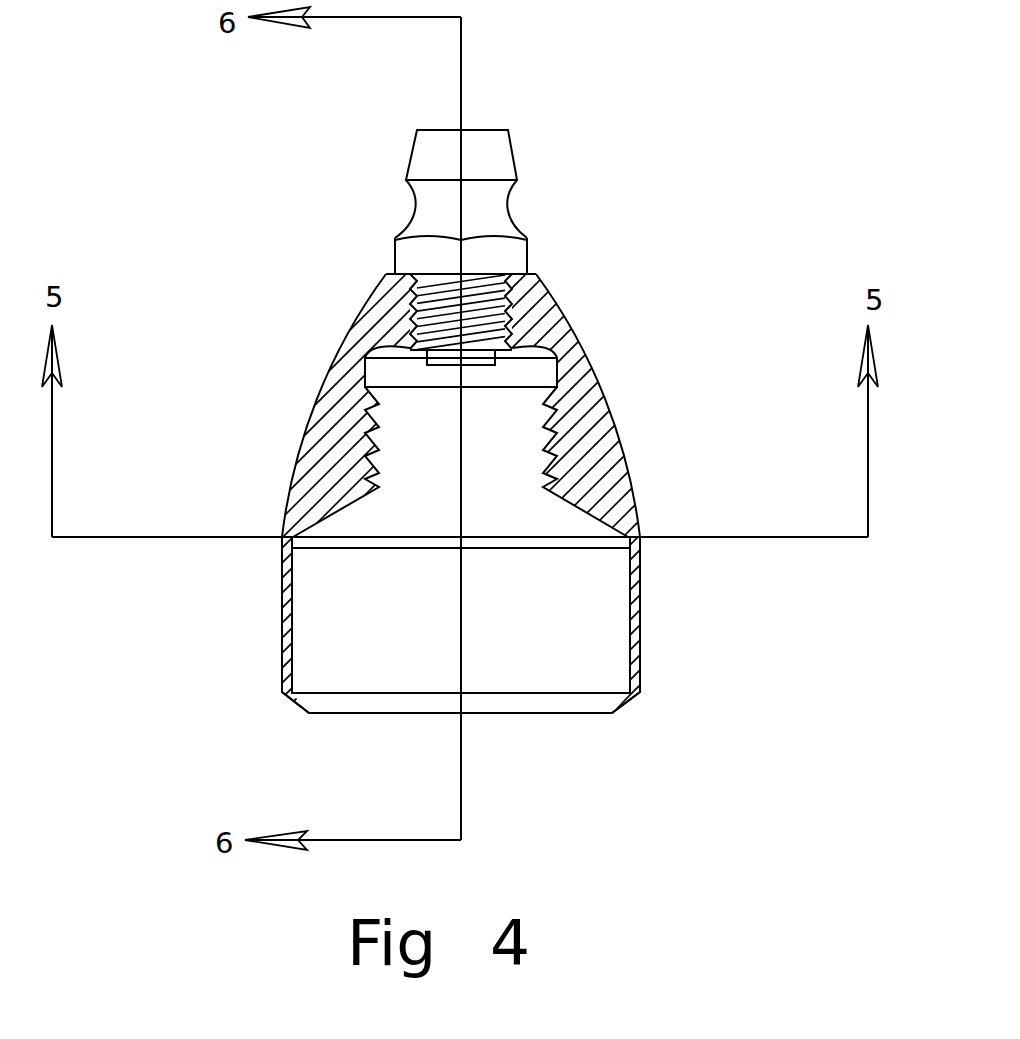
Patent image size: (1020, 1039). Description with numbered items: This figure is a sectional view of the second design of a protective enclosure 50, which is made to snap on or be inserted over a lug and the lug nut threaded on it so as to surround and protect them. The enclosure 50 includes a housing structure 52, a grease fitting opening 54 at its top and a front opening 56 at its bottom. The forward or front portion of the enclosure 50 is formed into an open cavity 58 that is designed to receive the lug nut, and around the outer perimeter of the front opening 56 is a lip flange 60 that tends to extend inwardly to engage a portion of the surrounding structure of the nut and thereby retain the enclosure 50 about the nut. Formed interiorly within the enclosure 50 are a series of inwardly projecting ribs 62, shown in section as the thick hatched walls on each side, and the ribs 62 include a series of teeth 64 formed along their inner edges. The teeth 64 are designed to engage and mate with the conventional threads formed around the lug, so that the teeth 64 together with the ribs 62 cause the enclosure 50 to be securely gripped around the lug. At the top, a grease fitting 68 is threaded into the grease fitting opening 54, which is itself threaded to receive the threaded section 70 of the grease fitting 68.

The protective enclosure 50 is at (695, 272).
The housing structure 52 is at (635, 503).
The grease fitting opening 54 is at (513, 319).
The front opening 56 is at (512, 702).
The open cavity 58 is at (502, 595).
The lip flange 60 is at (635, 700).
The inwardly projecting ribs 62 is at (592, 411).
The teeth 64 is at (540, 462).
The grease fitting 68 is at (482, 155).
The threaded section 70 is at (445, 300).